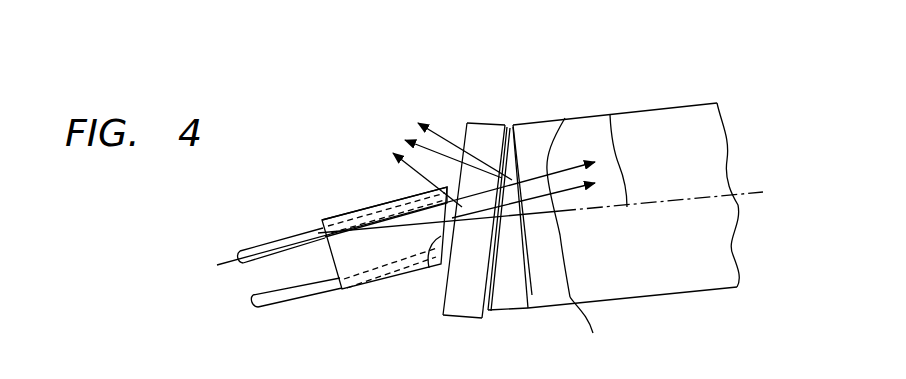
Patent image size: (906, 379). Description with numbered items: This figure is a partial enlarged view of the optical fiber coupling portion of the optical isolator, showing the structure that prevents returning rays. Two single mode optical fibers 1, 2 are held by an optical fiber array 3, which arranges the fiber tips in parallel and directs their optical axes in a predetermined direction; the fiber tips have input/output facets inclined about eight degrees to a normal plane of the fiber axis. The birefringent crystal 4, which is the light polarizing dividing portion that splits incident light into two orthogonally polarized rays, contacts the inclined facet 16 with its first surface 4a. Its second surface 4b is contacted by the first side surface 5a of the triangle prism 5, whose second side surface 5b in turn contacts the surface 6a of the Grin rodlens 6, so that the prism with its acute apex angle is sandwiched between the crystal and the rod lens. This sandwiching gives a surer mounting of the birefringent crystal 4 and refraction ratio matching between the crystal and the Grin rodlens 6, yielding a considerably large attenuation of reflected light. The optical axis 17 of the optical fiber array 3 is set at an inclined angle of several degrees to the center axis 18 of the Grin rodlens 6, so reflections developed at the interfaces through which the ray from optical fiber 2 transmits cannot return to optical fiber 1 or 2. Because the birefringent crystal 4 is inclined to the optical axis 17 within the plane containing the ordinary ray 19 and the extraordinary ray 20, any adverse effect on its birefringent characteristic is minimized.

The single mode optical fiber 1 is at (288, 242).
The single mode optical fiber 2 is at (285, 300).
The optical fiber array 3 is at (370, 275).
The birefringent crystal 4 is at (468, 219).
The first surface of birefringent crystal 4a is at (466, 130).
The second surface of birefringent crystal 4b is at (504, 123).
The triangle prism 5 is at (516, 252).
The first side surface of triangle prism 5a is at (487, 323).
The second side surface of triangle prism 5b is at (532, 295).
The Grin rodlens 6 is at (626, 213).
The surface of Grin rodlens 6a is at (517, 130).
The inclined facet 16 is at (429, 268).
The optical axis 17 is at (368, 209).
The center axis 18 is at (610, 115).
The ordinary ray 19 is at (565, 118).
The extraordinary ray 20 is at (594, 331).